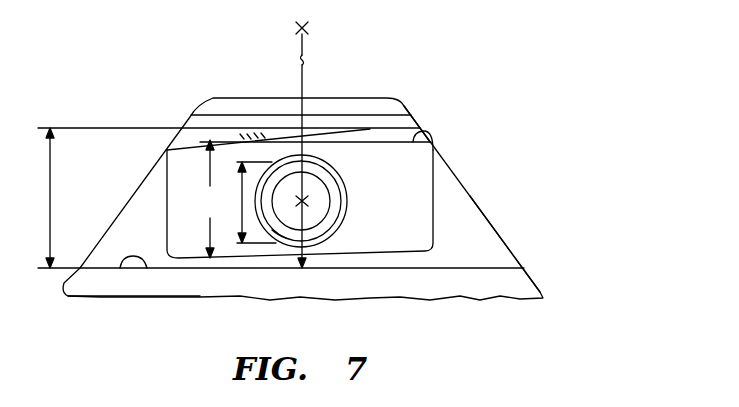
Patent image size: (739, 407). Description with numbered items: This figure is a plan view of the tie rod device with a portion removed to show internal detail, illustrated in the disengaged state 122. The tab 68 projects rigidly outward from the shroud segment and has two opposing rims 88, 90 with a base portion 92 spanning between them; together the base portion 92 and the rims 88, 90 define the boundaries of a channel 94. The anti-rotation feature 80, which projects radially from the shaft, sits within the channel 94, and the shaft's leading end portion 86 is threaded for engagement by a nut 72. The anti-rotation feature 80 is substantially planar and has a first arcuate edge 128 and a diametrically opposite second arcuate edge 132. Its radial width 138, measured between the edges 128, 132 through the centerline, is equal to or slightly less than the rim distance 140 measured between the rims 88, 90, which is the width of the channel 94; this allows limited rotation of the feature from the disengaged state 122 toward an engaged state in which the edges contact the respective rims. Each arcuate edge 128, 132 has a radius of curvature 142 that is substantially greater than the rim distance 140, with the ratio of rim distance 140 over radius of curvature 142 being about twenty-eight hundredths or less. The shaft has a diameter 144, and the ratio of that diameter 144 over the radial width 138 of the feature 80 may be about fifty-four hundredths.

The tab 68 is at (236, 98).
The radius of curvature 142 is at (291, 81).
The second arcuate edge 132 is at (330, 132).
The rim 90 is at (388, 140).
The anti-rotation feature 80 is at (428, 134).
The disengaged state 122 is at (570, 147).
The rim distance 140 is at (51, 198).
The radial width 138 is at (229, 199).
The threaded nut 72 is at (311, 197).
The leading end portion 86 is at (323, 214).
The channel 94 is at (481, 257).
The base portion 92 is at (509, 245).
The rim 88 is at (125, 270).
The first arcuate edge 128 is at (179, 258).
The diameter 144 is at (278, 232).